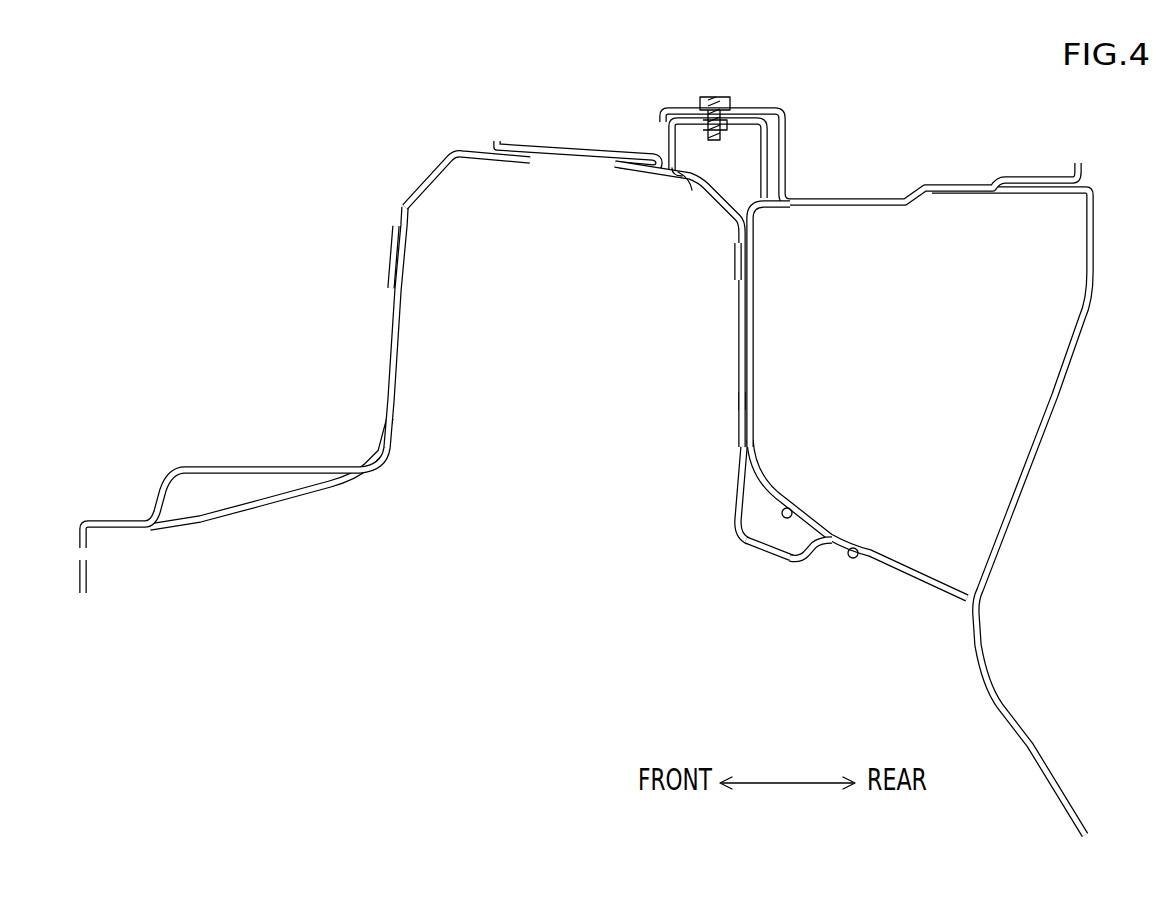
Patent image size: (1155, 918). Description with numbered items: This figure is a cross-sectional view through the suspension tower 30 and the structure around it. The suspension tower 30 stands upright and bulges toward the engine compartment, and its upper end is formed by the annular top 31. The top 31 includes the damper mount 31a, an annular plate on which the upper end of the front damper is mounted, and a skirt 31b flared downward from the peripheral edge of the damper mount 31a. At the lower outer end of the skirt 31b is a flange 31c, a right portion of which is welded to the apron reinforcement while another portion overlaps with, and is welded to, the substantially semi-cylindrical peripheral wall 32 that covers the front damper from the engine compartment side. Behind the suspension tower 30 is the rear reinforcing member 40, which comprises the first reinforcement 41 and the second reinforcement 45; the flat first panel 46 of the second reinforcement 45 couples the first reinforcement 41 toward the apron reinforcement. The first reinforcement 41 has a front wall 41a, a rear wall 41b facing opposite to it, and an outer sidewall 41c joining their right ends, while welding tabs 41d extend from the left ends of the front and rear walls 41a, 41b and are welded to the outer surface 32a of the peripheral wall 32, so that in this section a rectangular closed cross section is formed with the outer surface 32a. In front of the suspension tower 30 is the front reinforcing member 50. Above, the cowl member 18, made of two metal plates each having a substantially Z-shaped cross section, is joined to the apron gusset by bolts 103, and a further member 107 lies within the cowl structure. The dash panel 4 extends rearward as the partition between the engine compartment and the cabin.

The dash panel 4 is at (1055, 393).
The cowl member 18 is at (780, 141).
The suspension tower 30 is at (460, 126).
The top 31 is at (508, 161).
The damper mount 31a is at (487, 150).
The skirt 31b is at (425, 183).
The flange 31c is at (405, 247).
The peripheral wall 32 is at (388, 326).
The outer surface 32a is at (792, 508).
The rear reinforcing member 40 is at (793, 572).
The first reinforcement 41 is at (785, 523).
The front wall 41a is at (738, 493).
The rear wall 41b is at (813, 552).
The outer sidewall 41c is at (757, 552).
The welding tab 41d is at (740, 398).
The second reinforcement 45 is at (738, 307).
The first panel 46 is at (686, 305).
The front reinforcing member 50 is at (260, 513).
The bolt 103 is at (713, 93).
The inner bracket 107 is at (763, 167).